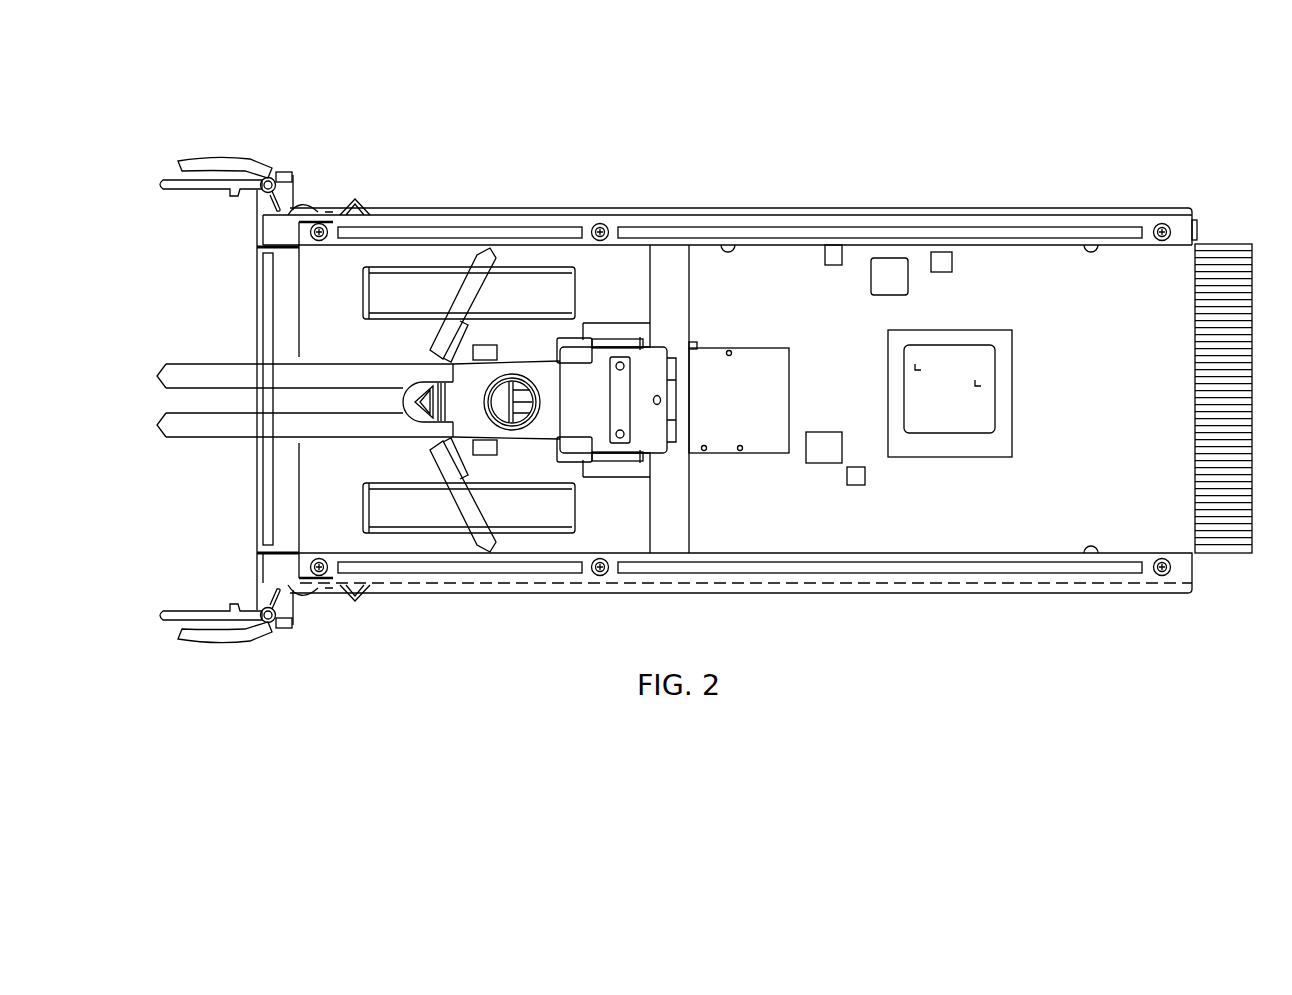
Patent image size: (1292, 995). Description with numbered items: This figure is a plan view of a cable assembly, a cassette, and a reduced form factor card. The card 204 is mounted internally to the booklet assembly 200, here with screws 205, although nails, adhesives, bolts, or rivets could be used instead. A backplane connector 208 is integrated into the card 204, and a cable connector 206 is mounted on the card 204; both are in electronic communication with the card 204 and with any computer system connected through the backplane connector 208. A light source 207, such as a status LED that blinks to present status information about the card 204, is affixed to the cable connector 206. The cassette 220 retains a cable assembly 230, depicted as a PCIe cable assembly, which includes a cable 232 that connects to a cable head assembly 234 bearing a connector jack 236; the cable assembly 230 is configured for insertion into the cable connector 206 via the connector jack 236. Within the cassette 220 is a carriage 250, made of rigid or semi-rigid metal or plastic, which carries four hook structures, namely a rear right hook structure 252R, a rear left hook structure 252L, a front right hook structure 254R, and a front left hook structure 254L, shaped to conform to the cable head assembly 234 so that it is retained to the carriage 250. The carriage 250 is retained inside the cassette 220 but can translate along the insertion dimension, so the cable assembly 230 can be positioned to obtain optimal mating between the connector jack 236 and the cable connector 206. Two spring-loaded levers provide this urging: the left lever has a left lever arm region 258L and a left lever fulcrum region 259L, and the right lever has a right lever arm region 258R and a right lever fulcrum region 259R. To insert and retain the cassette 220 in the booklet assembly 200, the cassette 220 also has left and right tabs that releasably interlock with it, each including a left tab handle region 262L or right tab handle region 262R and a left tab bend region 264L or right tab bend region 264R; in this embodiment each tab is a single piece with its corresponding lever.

The booklet assembly 200 is at (1068, 92).
The card 204 is at (985, 308).
The screws 205 is at (1162, 576).
The cable connector 206 is at (725, 405).
The light source 207 is at (693, 343).
The backplane connector 208 is at (1228, 280).
The cassette 220 is at (330, 287).
The cable assembly 230 is at (165, 357).
The cable 232 is at (330, 428).
The cable head assembly 234 is at (643, 437).
The connector jack 236 is at (683, 357).
The carriage 250 is at (447, 363).
The rear left hook structure 252L is at (488, 353).
The rear right hook structure 252R is at (488, 447).
The front left hook structure 254L is at (576, 352).
The front right hook structure 254R is at (568, 455).
The left lever arm region 258L is at (460, 323).
The right lever arm region 258R is at (463, 477).
The left lever fulcrum region 259L is at (480, 268).
The right lever fulcrum region 259R is at (480, 532).
The left tab handle region 262L is at (257, 247).
The right tab handle region 262R is at (268, 557).
The left tab bend region 264L is at (362, 207).
The right tab bend region 264R is at (352, 597).